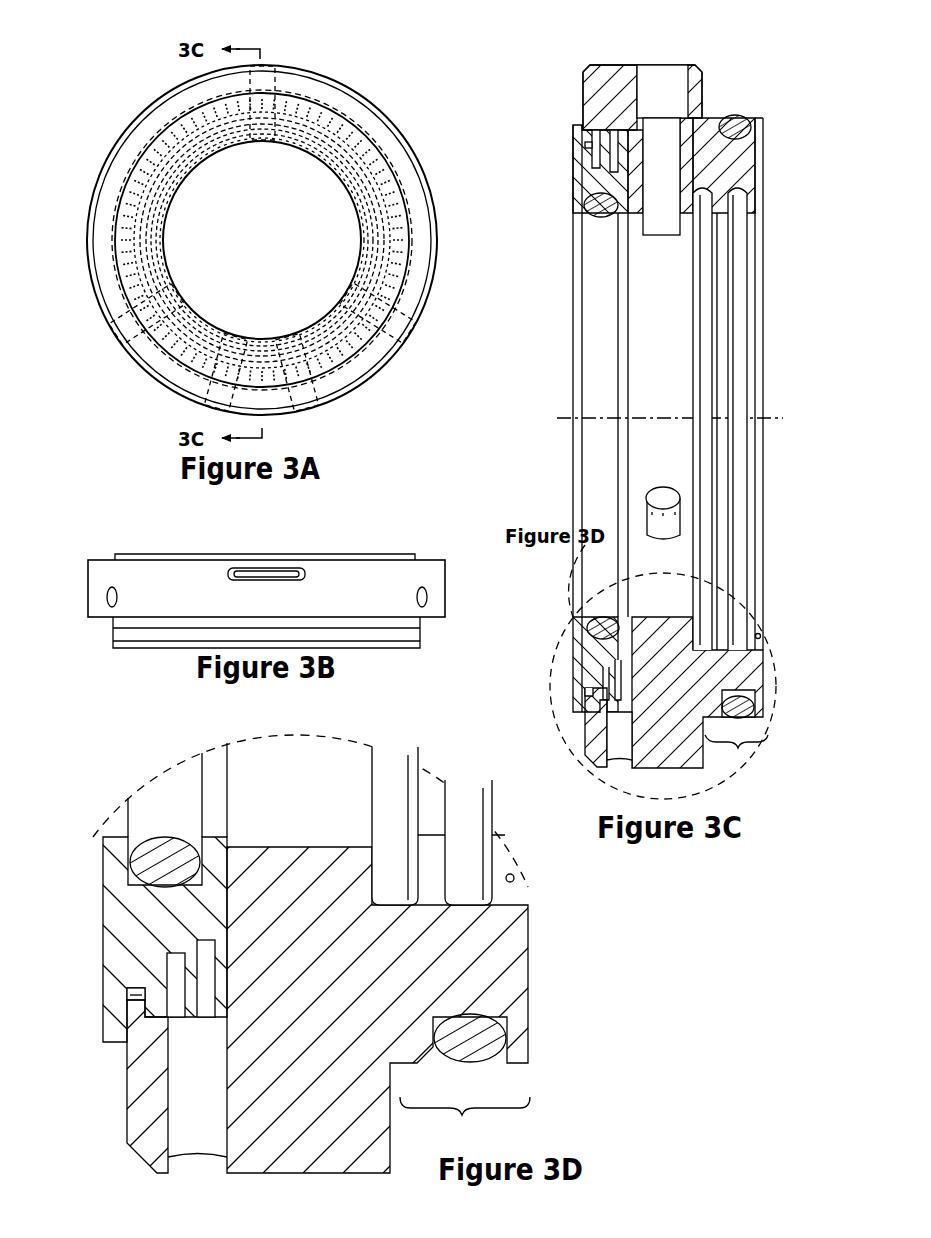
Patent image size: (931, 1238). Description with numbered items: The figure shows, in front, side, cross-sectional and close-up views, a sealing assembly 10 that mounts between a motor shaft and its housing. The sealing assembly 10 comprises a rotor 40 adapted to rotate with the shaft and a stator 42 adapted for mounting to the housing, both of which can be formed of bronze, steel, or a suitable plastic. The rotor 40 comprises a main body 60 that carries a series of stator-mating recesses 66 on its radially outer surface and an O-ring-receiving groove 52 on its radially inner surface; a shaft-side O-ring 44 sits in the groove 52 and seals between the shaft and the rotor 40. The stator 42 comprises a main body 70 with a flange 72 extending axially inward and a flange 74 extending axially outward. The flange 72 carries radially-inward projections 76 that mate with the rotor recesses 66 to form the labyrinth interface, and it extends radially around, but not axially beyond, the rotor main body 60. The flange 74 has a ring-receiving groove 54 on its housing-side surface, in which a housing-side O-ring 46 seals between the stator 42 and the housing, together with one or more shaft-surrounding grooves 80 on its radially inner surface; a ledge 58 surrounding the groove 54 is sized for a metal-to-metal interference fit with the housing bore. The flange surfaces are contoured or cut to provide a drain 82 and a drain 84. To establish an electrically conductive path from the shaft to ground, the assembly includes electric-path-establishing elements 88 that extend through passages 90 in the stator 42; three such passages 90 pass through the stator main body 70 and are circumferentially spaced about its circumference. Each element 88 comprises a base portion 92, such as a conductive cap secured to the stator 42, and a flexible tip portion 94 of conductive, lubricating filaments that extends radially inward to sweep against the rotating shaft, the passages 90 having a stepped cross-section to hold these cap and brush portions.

In FIG. 3A, the sealing assembly 10 is at (386, 92).
In FIG. 3B, the sealing assembly 10 is at (110, 540).
In FIG. 3C, the sealing assembly 10 is at (768, 282).
In FIG. 3A, the rotor 40 is at (336, 336).
In FIG. 3B, the rotor 40 is at (136, 556).
In FIG. 3C, the rotor 40 is at (572, 186).
In FIG. 3D, the rotor 40 is at (103, 933).
In FIG. 3A, the stator 42 is at (355, 352).
In FIG. 3B, the stator 42 is at (95, 576).
In FIG. 3C, the stator 42 is at (762, 186).
In FIG. 3D, the stator 42 is at (530, 943).
In FIG. 3C, the shaft-side O-ring 44 is at (600, 218).
In FIG. 3D, the shaft-side O-ring 44 is at (168, 855).
In FIG. 3B, the housing-side O-ring 46 is at (414, 648).
In FIG. 3C, the housing-side O-ring 46 is at (748, 715).
In FIG. 3D, the housing-side O-ring 46 is at (480, 1045).
In FIG. 3D, the shaft-side groove 52 is at (128, 840).
In FIG. 3D, the ring-receiving groove 54 is at (505, 1060).
In FIG. 3C, the ledge 58 is at (738, 750).
In FIG. 3D, the ledge 58 is at (465, 1120).
In FIG. 3C, the main body 60 is at (580, 167).
In FIG. 3D, the main body 60 is at (135, 948).
In FIG. 3D, the stator-mating recesses 66 is at (128, 992).
In FIG. 3C, the main body 70 is at (703, 85).
In FIG. 3D, the main body 70 is at (358, 1150).
In FIG. 3C, the flange 72 is at (597, 102).
In FIG. 3D, the flange 72 is at (150, 1148).
In FIG. 3C, the flange 74 is at (750, 152).
In FIG. 3D, the flange 74 is at (528, 980).
In FIG. 3D, the radially-inward projections 76 is at (140, 1030).
In FIG. 3C, the shaft-surrounding grooves 80 is at (740, 382).
In FIG. 3D, the shaft-surrounding grooves 80 is at (385, 775).
In FIG. 3C, the drain 82 is at (619, 740).
In FIG. 3D, the drain 82 is at (182, 1152).
In FIG. 3C, the drain 84 is at (758, 636).
In FIG. 3D, the drain 84 is at (514, 880).
In FIG. 3C, the electric-path-establishing elements 88 is at (672, 62).
In FIG. 3A, the passages 90 is at (270, 70).
In FIG. 3B, the passages 90 is at (110, 602).
In FIG. 3C, the passages 90 is at (708, 122).
In FIG. 3C, the base portion 92 is at (660, 85).
In FIG. 3C, the tip portion 94 is at (670, 228).